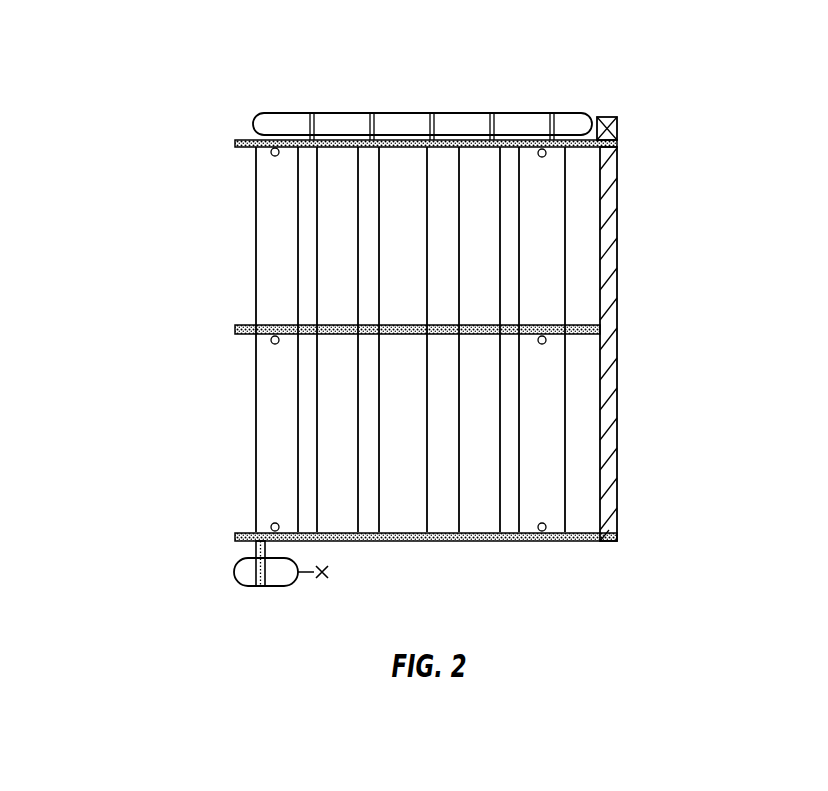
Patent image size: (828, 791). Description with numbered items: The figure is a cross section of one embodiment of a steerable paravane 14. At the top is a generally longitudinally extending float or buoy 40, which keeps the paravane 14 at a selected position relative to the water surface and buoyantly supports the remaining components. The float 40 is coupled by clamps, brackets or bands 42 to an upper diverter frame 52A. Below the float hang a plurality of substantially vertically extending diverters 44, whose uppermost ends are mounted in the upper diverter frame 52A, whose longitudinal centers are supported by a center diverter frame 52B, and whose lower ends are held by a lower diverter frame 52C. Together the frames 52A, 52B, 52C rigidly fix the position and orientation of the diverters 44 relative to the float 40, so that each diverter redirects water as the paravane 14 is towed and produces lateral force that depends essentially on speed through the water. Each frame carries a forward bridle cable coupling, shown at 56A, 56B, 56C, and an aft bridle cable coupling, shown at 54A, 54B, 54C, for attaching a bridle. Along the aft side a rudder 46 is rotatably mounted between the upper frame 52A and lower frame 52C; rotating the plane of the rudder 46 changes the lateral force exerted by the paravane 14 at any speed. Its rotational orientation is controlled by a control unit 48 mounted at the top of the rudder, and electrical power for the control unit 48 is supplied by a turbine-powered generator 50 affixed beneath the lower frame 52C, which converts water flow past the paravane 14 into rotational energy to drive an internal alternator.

The paravane 14 is at (148, 74).
The float 40 is at (400, 113).
The bands 42 is at (312, 113).
The diverters 44 is at (262, 228).
The rudder 46 is at (608, 247).
The control unit 48 is at (617, 117).
The turbine-powered generator 50 is at (280, 580).
The upper diverter frame 52A is at (236, 143).
The center diverter frame 52B is at (236, 328).
The lower diverter frame 52C is at (236, 536).
The aft bridle cable coupling 54A is at (545, 157).
The aft bridle cable coupling 54B is at (545, 344).
The aft bridle cable coupling 54C is at (545, 523).
The forward bridle cable coupling 56A is at (272, 157).
The forward bridle cable coupling 56B is at (272, 345).
The forward bridle cable coupling 56C is at (275, 522).